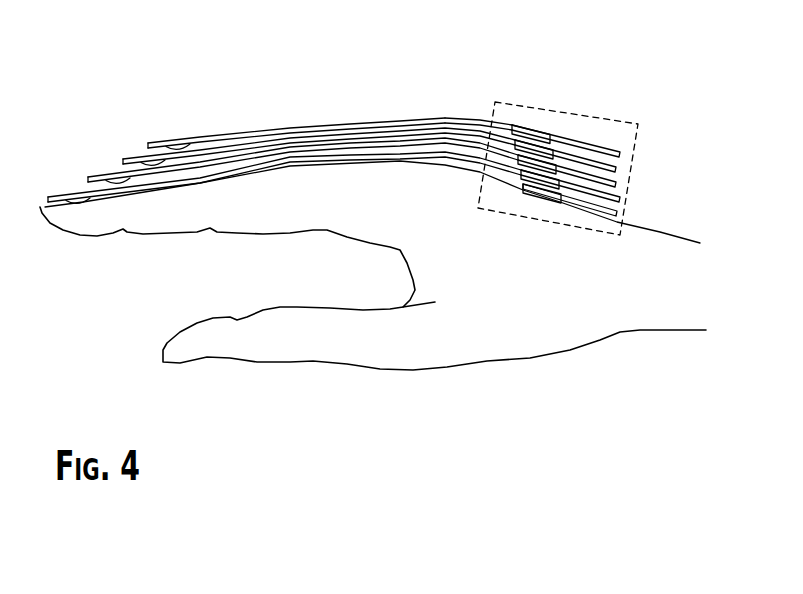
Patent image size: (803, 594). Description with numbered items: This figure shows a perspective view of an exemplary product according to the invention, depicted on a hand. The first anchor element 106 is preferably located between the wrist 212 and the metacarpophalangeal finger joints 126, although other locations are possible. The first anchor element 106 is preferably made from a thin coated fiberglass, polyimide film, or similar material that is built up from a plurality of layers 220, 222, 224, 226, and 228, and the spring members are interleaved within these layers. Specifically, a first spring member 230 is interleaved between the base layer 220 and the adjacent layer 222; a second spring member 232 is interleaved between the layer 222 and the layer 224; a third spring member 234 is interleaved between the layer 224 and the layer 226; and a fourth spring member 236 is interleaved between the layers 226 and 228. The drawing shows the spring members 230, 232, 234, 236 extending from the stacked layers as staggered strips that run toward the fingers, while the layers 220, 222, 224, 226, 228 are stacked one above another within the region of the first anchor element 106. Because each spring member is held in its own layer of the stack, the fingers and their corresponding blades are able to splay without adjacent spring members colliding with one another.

The first anchor element 106 is at (548, 110).
The metacarpophalangeal finger joints 126 is at (445, 167).
The wrist 212 is at (664, 236).
The base layer 220 is at (607, 214).
The layer 222 is at (610, 198).
The layer 224 is at (613, 183).
The layer 226 is at (616, 167).
The layer 228 is at (620, 150).
The first spring member 230 is at (207, 175).
The second spring member 232 is at (272, 150).
The third spring member 234 is at (322, 137).
The fourth spring member 236 is at (380, 122).